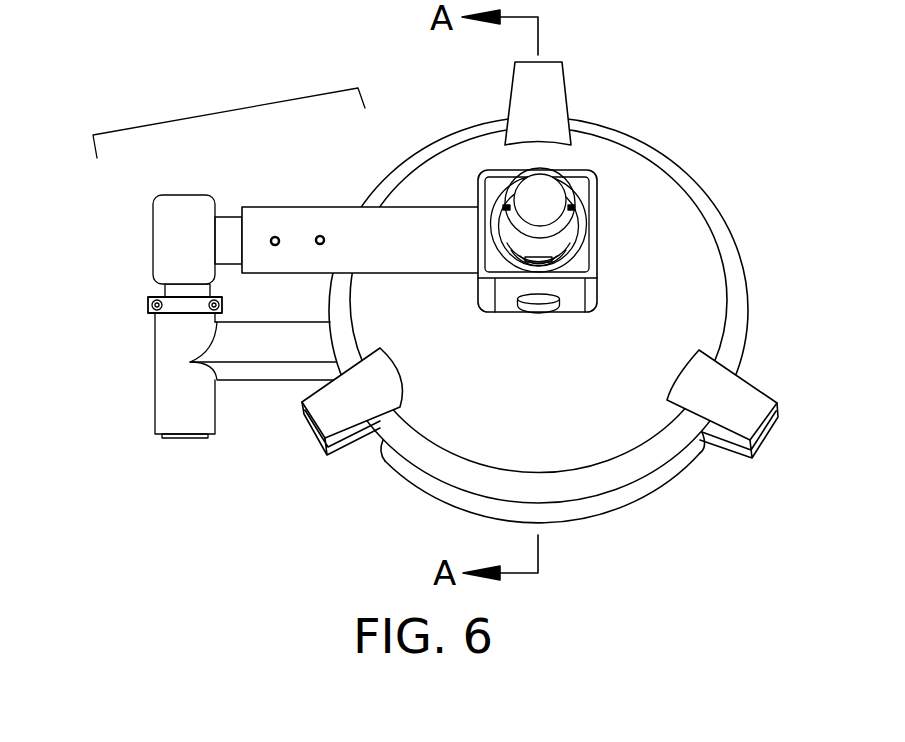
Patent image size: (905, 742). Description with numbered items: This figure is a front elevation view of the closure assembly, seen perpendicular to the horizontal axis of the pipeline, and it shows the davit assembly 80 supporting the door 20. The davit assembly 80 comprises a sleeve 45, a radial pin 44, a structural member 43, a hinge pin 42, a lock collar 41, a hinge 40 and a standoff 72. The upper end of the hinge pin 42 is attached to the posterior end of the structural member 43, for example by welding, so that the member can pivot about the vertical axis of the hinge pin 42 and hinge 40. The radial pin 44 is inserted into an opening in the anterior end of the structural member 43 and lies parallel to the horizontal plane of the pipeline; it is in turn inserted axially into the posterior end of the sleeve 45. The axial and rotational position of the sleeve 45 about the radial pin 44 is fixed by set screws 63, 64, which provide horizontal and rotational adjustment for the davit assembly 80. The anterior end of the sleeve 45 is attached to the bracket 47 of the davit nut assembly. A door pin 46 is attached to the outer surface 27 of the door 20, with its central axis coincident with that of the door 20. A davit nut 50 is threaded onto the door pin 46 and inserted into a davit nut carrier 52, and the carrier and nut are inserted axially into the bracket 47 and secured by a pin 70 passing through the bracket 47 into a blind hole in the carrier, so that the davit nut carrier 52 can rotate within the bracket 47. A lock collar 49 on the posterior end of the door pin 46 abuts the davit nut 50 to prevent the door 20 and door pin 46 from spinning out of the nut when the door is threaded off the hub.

The door 20 is at (695, 192).
The outer surface 27 is at (633, 425).
The hinge 40 is at (208, 420).
The lock collar 41 is at (222, 300).
The hinge pin 42 is at (183, 438).
The structural member 43 is at (188, 203).
The radial pin 44 is at (229, 226).
The sleeve 45 is at (342, 209).
The door pin 46 is at (547, 194).
The bracket 47 is at (585, 297).
The lock collar 49 is at (562, 212).
The davit nut 50 is at (573, 228).
The davit nut carrier 52 is at (577, 260).
The set screw 63 is at (274, 236).
The set screw 64 is at (319, 235).
The pin 70 is at (540, 304).
The standoff 72 is at (260, 373).
The davit assembly 80 is at (225, 111).